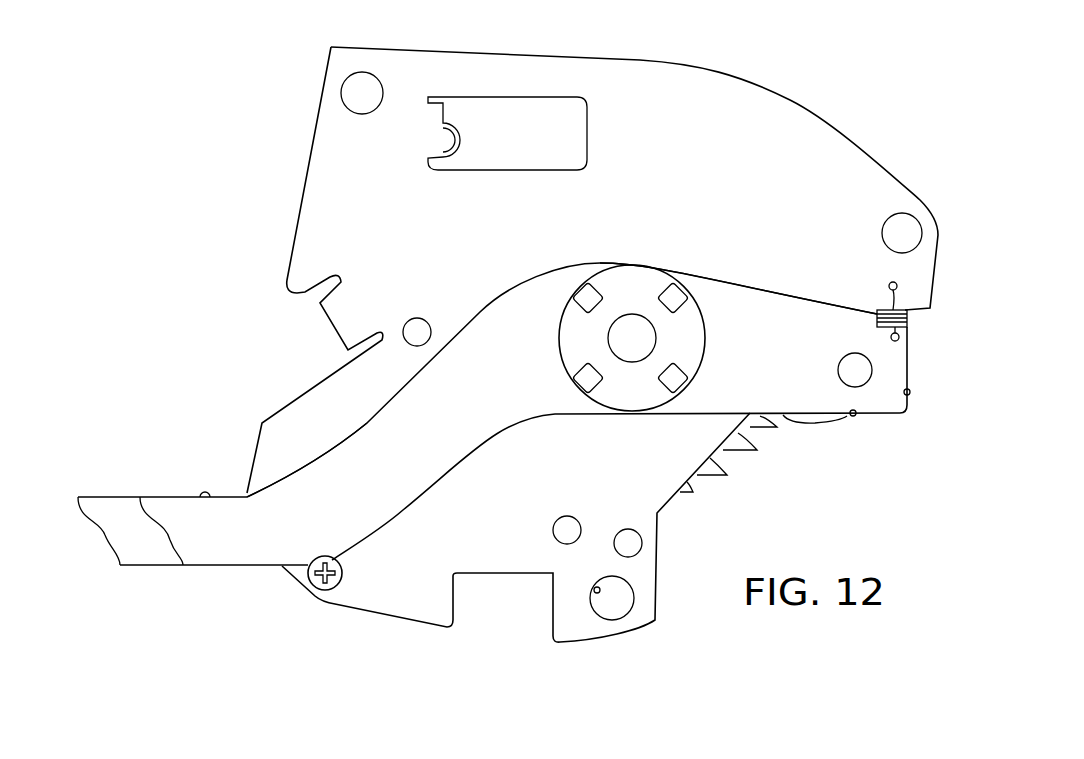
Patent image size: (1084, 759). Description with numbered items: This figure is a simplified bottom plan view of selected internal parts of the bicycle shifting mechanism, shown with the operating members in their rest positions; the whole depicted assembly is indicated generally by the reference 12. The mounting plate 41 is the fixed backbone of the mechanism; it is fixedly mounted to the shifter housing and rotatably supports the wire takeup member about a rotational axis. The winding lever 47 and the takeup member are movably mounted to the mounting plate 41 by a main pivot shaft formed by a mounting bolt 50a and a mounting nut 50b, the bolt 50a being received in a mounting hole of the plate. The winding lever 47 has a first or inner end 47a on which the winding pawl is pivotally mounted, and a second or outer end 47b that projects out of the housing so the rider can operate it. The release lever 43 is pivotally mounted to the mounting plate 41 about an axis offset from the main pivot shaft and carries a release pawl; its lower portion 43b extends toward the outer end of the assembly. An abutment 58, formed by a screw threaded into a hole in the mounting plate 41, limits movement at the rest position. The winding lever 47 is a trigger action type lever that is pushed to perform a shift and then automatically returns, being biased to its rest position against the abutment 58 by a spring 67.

The latch assembly 12 is at (240, 131).
The mounting plate 41 is at (710, 127).
The release lever 43 is at (120, 517).
The bracket bottom edge 43b is at (140, 568).
The winding lever 47 is at (210, 541).
The inner end 47a is at (760, 320).
The outer end 47b is at (228, 520).
The mounting bolt 50a is at (633, 337).
The mounting nut 50b is at (700, 353).
The abutment 58 is at (340, 582).
The spring 67 is at (910, 317).